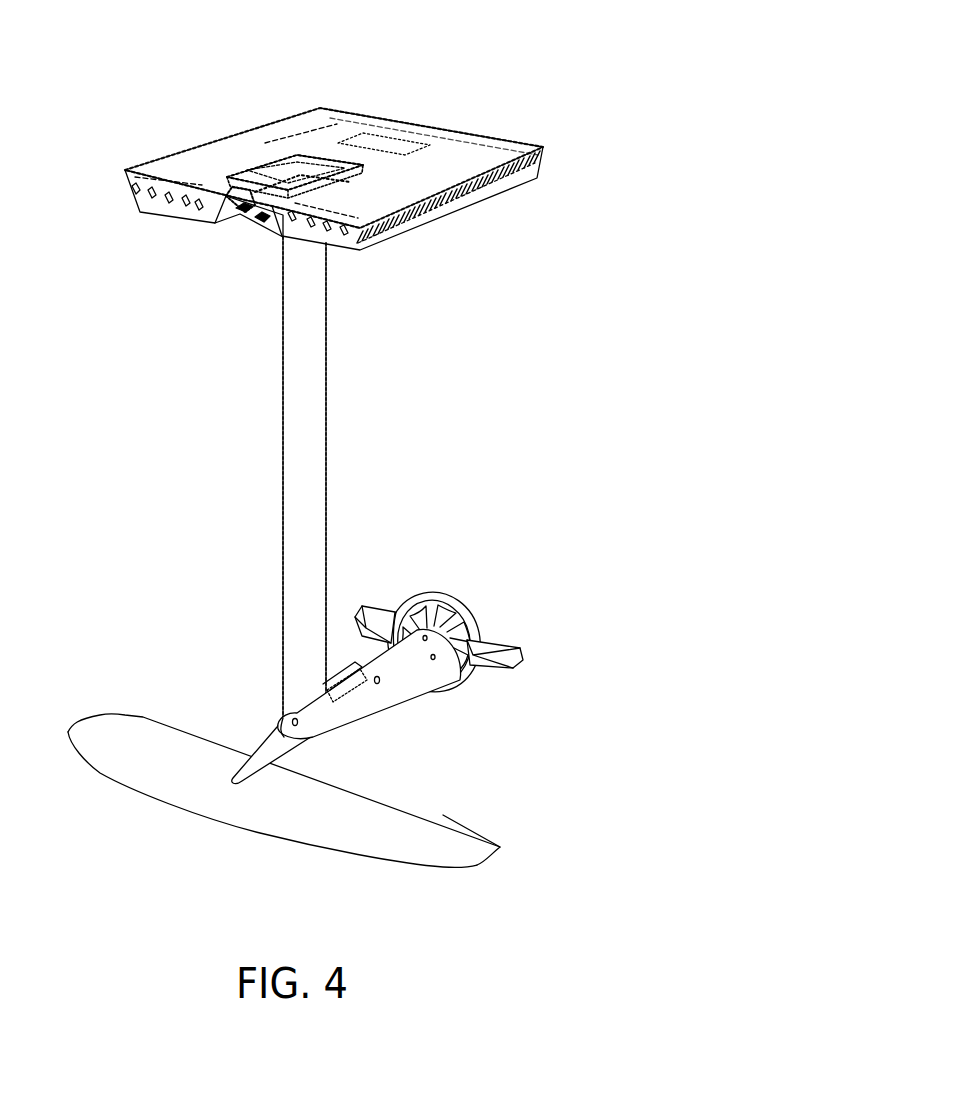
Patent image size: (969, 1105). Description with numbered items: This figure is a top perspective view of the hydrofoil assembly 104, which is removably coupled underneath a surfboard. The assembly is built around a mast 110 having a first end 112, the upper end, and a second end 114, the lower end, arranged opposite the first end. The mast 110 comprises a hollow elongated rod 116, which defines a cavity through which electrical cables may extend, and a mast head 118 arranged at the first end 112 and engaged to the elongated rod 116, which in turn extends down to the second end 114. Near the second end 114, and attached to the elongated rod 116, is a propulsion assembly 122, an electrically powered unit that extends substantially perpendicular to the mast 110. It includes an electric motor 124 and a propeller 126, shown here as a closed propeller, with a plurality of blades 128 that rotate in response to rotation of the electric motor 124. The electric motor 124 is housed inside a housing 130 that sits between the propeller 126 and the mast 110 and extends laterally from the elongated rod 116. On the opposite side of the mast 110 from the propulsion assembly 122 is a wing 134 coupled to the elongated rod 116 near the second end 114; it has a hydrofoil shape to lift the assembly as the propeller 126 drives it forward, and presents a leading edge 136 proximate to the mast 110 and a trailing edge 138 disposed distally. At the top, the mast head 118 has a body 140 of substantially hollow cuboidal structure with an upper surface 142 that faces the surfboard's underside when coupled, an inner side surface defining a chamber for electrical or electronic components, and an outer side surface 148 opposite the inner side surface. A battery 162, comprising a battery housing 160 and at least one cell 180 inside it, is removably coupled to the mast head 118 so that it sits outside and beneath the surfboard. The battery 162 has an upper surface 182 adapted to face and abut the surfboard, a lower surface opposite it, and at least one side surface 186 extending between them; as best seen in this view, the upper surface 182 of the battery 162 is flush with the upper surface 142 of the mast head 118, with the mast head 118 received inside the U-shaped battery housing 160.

The hydrofoil assembly 104 is at (568, 72).
The mast 110 is at (360, 393).
The first end 112 is at (308, 128).
The second end 114 is at (290, 702).
The elongated rod 116 is at (297, 365).
The mast head 118 is at (285, 158).
The propulsion assembly 122 is at (370, 657).
The electric motor 124 is at (350, 700).
The propeller 126 is at (460, 610).
The blades 128 is at (473, 628).
The housing 130 is at (437, 690).
The wing 134 is at (217, 757).
The leading edge 136 is at (257, 835).
The trailing edge 138 is at (443, 815).
The body 140 is at (243, 207).
The upper surface 142 is at (232, 195).
The outer side surface 148 is at (252, 218).
The battery housing 160 is at (337, 130).
The battery 162 is at (470, 200).
The cell 180 is at (397, 140).
The upper surface 182 is at (416, 184).
The side surface 186 is at (165, 204).